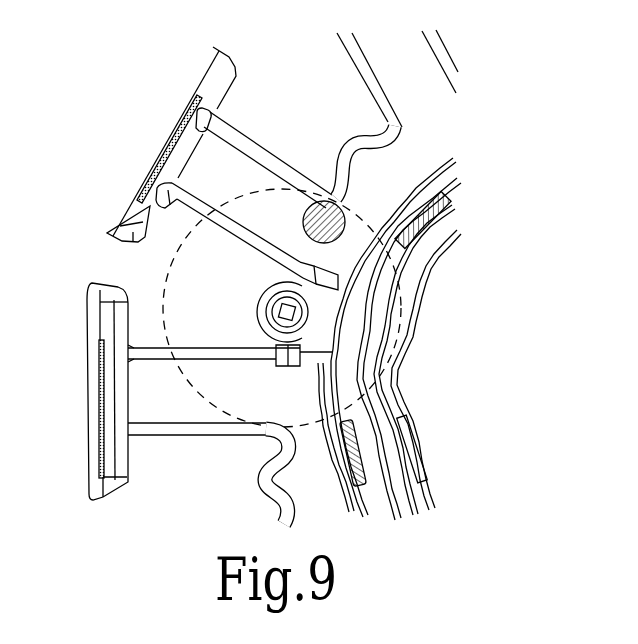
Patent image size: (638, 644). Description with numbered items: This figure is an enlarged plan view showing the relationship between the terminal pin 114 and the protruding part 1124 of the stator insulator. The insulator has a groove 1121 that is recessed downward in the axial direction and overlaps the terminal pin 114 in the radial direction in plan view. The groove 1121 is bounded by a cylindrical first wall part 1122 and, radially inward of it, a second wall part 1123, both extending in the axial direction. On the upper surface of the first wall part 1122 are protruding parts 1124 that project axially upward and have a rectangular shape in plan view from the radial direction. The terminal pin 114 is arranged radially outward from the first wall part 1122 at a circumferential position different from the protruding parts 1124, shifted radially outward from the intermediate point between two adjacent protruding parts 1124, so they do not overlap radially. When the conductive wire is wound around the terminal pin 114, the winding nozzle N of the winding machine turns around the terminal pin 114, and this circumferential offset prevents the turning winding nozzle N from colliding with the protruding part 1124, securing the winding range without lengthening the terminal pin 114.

The terminal pin 114 is at (277, 310).
The winding nozzle N is at (325, 204).
The groove 1121 is at (446, 252).
The first wall part 1122 is at (367, 507).
The second wall part 1123 is at (427, 262).
The protruding part 1124 is at (433, 218).